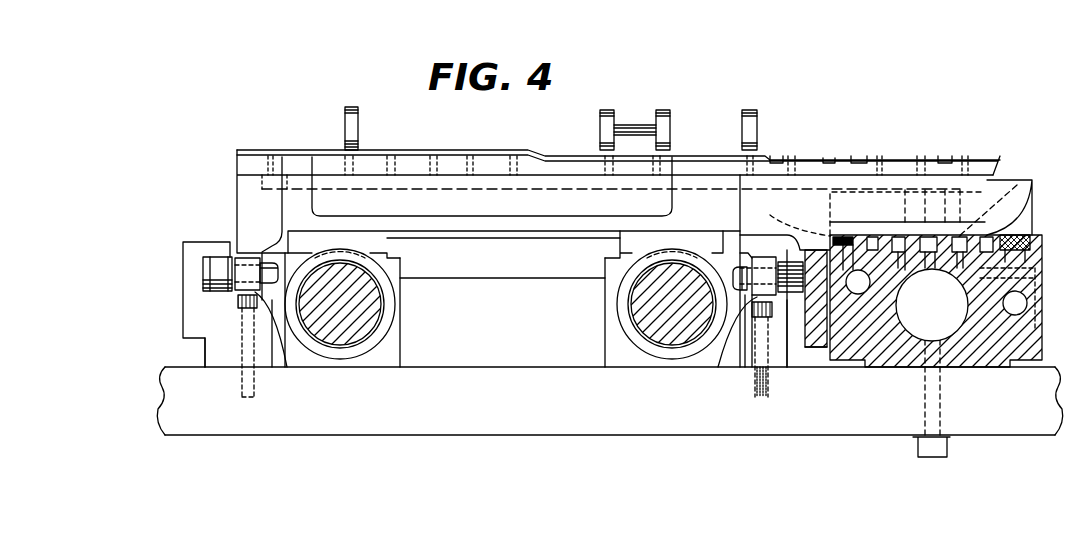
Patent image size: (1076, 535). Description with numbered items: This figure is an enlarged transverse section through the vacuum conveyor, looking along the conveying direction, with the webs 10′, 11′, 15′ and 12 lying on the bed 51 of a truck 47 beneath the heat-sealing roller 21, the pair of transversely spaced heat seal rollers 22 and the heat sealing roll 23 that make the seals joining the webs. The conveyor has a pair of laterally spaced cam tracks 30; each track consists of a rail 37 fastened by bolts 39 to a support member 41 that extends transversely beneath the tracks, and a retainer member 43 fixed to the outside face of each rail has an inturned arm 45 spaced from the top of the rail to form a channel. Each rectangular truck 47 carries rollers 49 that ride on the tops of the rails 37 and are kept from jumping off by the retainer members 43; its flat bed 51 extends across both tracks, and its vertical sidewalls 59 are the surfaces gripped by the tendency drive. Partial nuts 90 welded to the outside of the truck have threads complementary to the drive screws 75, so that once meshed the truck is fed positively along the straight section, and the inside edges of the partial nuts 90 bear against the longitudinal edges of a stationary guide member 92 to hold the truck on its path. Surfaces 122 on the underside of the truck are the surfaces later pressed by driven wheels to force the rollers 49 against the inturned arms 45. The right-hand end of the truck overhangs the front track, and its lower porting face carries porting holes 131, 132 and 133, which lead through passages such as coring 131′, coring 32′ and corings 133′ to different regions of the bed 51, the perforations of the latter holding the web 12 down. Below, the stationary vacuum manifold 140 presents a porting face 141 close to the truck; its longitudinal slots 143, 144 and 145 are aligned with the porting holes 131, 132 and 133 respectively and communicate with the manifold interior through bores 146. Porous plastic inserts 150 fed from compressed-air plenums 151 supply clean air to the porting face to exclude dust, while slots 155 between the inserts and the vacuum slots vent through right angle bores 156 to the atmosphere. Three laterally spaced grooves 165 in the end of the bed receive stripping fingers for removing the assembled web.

The web 10′ is at (292, 150).
The web 11′ is at (527, 152).
The web 12 is at (826, 173).
The web 15′ is at (673, 152).
The heat-sealing roller 21 is at (352, 108).
The heat seal rollers 22 is at (606, 110).
The heat sealing roll 23 is at (758, 110).
The cam tracks 30 is at (215, 285).
The coring 32′ is at (708, 158).
The rail 37 is at (220, 336).
The bolts 39 is at (247, 367).
The support member 41 is at (420, 408).
The retainer member 43 is at (188, 308).
The inturned arm 45 is at (216, 246).
The truck 47 is at (234, 172).
The rollers 49 is at (213, 263).
The bed 51 is at (237, 152).
The vertical sidewalls 59 is at (237, 186).
The screws 75 is at (395, 305).
The partial nuts 90 is at (393, 250).
The stationary guide member 92 is at (510, 270).
The surfaces 122 is at (506, 341).
The porting hole 131 is at (902, 206).
The coring 131′ is at (406, 183).
The porting holes 132 is at (950, 176).
The porting holes 133 is at (998, 174).
The corings 133′ is at (896, 178).
The vacuum manifold 140 is at (938, 330).
The porting face 141 is at (1033, 212).
The longitudinal slot 143 is at (897, 250).
The longitudinal slot 144 is at (920, 252).
The longitudinal slot 145 is at (1033, 196).
The bores 146 is at (1008, 184).
The porous plastic inserts 150 is at (840, 238).
The compressed-air plenums 151 is at (858, 294).
The slots 155 is at (862, 238).
The right angle bores 156 is at (1030, 330).
The grooves 165 is at (779, 158).